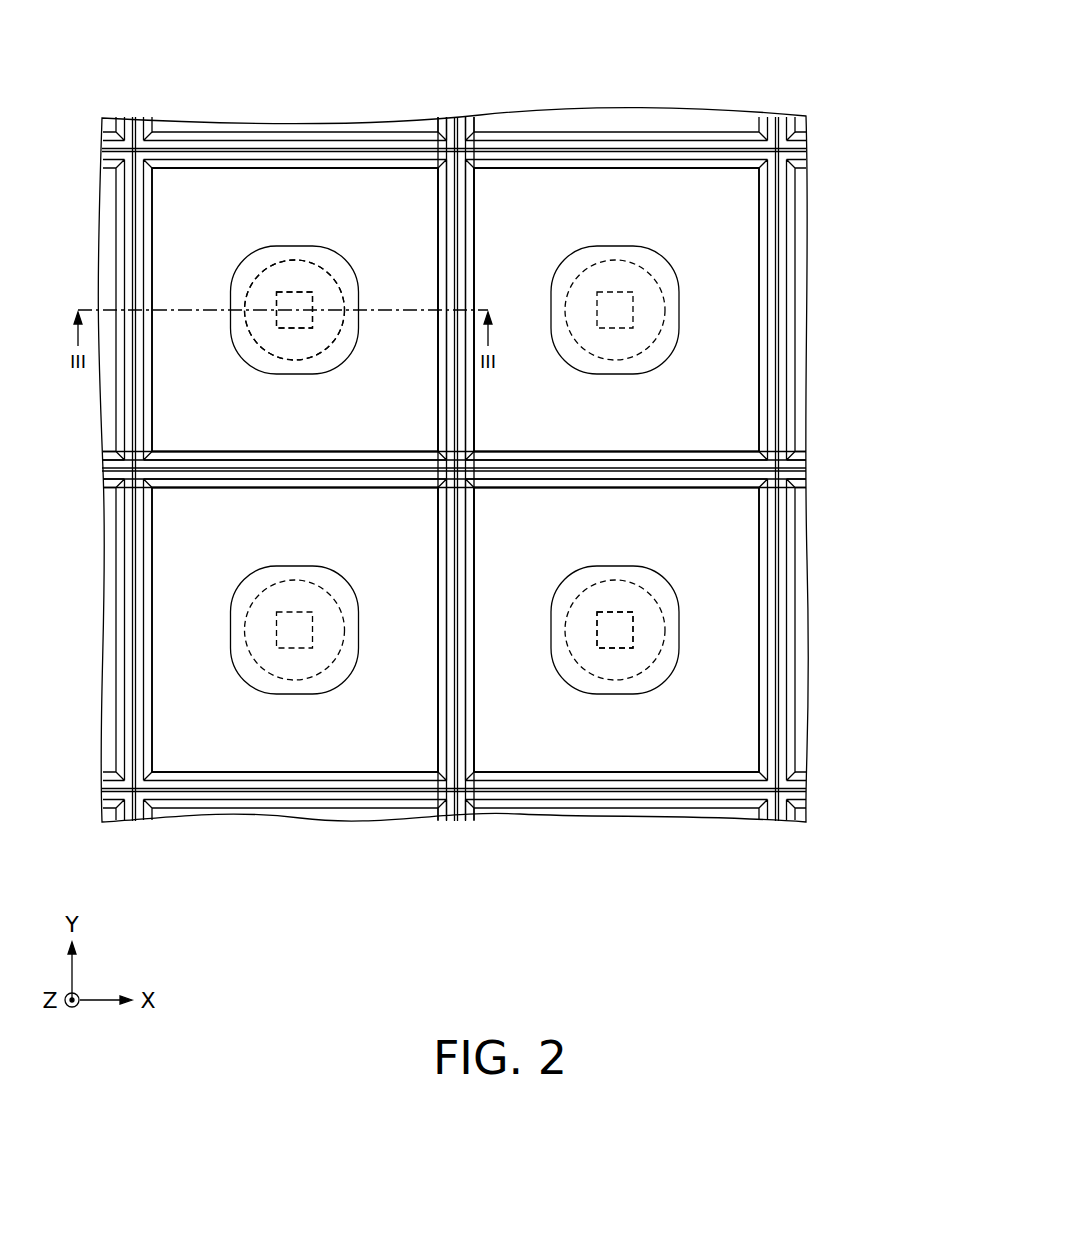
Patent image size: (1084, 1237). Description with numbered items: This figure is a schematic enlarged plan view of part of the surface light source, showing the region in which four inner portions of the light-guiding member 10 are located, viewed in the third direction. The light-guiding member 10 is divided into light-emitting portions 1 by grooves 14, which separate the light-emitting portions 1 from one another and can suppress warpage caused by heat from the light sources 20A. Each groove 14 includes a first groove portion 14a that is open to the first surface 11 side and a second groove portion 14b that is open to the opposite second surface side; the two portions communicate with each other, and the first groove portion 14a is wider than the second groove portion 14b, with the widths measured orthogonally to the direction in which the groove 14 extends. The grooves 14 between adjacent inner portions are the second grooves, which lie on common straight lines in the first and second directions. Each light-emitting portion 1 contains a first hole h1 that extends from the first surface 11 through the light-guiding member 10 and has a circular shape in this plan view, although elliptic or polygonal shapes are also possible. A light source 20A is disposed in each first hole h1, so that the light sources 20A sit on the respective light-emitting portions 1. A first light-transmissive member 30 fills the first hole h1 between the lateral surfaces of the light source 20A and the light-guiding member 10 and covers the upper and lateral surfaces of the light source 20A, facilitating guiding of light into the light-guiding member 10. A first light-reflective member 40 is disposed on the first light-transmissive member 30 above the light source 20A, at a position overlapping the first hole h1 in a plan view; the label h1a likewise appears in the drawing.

The light-emitting portion 1 is at (397, 230).
The light-guiding member 10 is at (502, 114).
The first surface 11 is at (717, 368).
The groove 14 is at (390, 917).
The first groove portion 14a is at (681, 452).
The second groove portion 14b is at (683, 486).
The light source 20A is at (292, 328).
The first light-transmissive member 30 is at (298, 277).
The first light-reflective member 40 is at (237, 280).
The first hole h1 is at (280, 280).
The opening h1a is at (333, 273).